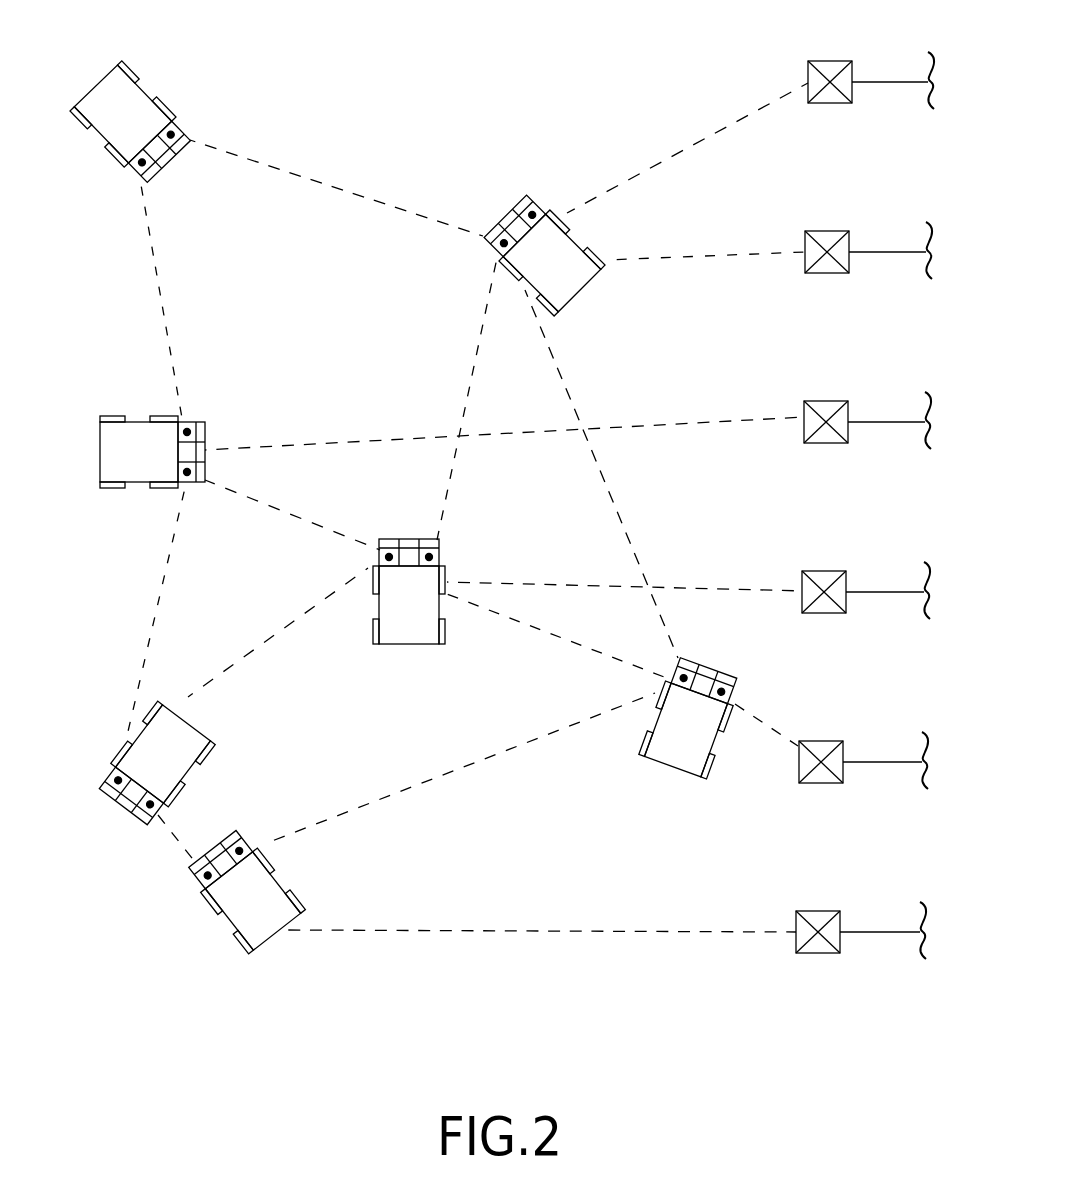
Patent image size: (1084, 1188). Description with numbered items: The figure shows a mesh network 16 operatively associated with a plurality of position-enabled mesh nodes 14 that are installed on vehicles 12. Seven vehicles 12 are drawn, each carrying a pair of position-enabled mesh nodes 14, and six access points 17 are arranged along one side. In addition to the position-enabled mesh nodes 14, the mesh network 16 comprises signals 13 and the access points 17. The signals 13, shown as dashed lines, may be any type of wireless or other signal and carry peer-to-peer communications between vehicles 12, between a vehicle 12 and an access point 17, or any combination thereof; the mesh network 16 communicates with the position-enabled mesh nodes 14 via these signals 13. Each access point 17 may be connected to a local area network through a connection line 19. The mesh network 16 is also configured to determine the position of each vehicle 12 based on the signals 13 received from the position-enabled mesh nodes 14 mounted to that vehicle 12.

The vehicle 12 is at (147, 91).
The signal 13 is at (352, 193).
The position-enabled mesh node 14 is at (168, 136).
The mesh network 16 is at (143, 906).
The access point 17 is at (828, 60).
The connection line 19 is at (878, 84).